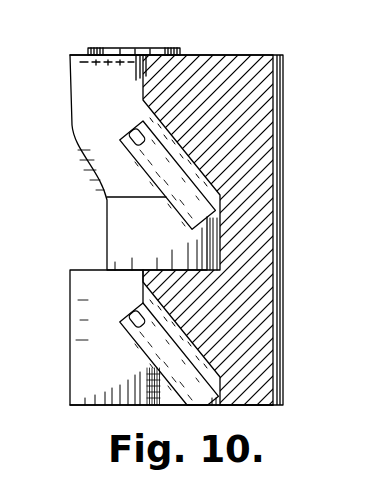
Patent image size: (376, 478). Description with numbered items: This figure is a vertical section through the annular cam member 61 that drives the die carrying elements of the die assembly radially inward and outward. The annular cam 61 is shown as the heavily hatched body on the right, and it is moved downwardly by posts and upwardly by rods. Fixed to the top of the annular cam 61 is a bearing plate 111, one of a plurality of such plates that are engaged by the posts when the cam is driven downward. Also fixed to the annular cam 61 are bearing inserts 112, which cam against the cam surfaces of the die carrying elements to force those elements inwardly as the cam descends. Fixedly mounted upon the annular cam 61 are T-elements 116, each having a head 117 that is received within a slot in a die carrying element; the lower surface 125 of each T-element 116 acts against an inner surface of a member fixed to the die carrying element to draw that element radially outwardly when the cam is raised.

The annular cam member 61 is at (258, 178).
The bearing plate 111 is at (140, 48).
The bearing insert 112 is at (153, 108).
The T-element 116 is at (126, 171).
The head 117 is at (173, 205).
The lower surface 125 is at (138, 133).